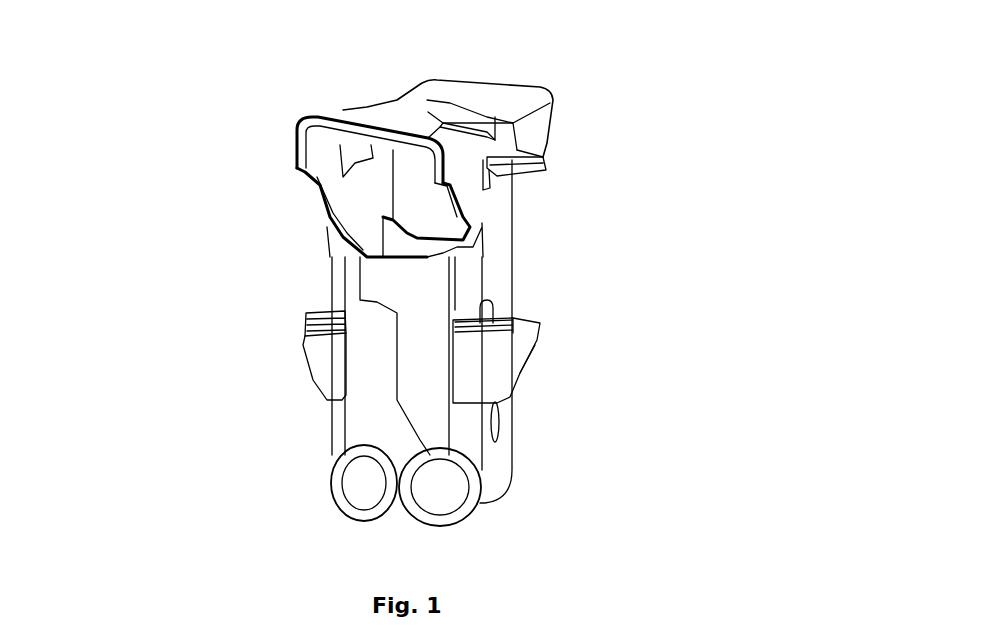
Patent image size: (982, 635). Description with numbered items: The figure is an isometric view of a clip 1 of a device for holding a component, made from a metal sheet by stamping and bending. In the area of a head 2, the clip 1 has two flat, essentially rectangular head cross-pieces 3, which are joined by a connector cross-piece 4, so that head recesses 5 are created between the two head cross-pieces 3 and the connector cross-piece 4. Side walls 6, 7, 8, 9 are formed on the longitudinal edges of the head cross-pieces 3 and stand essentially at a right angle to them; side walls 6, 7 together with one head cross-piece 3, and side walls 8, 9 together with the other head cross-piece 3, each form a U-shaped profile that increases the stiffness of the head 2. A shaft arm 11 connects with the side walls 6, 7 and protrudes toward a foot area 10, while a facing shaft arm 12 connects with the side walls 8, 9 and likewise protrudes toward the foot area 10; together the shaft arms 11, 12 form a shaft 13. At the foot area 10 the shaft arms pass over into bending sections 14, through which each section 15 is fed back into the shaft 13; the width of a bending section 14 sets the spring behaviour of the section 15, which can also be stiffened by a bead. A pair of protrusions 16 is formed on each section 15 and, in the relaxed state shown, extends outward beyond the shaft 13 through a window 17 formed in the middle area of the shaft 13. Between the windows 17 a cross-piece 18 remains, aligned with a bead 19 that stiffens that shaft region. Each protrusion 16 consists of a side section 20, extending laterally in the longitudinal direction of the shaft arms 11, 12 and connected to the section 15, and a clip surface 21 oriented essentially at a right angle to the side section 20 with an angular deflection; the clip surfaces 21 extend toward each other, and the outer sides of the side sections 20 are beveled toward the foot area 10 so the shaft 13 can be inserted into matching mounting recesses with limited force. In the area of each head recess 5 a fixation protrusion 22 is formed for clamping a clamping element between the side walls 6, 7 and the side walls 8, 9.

The clip 1 is at (723, 87).
The head 2 is at (592, 85).
The head cross-piece 3 is at (422, 90).
The connector cross-piece 4 is at (428, 112).
The head recess 5 is at (493, 117).
The side wall 6 is at (497, 183).
The side wall 7 is at (537, 133).
The side wall 8 is at (297, 152).
The side wall 9 is at (365, 112).
The foot area 10 is at (530, 477).
The shaft arm 11 is at (493, 280).
The shaft arm 12 is at (340, 270).
The shaft 13 is at (632, 348).
The bending section 14 is at (353, 520).
The section 15 is at (373, 473).
The protrusion 16 is at (297, 362).
The window 17 is at (487, 317).
The cross-piece 18 is at (513, 330).
The bead 19 is at (497, 417).
The side section 20 is at (333, 367).
The clip surface 21 is at (307, 318).
The fixation protrusion 22 is at (545, 163).